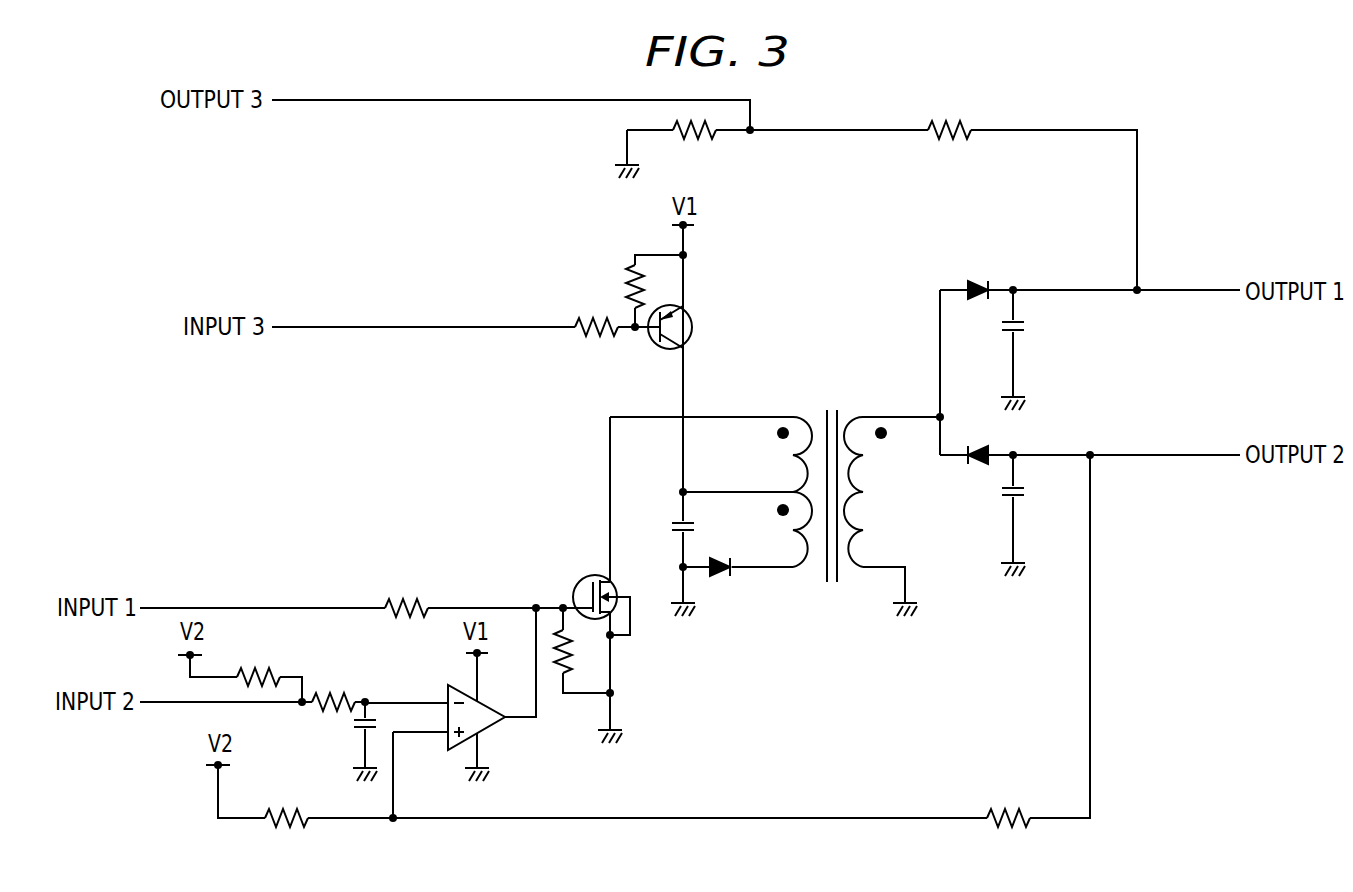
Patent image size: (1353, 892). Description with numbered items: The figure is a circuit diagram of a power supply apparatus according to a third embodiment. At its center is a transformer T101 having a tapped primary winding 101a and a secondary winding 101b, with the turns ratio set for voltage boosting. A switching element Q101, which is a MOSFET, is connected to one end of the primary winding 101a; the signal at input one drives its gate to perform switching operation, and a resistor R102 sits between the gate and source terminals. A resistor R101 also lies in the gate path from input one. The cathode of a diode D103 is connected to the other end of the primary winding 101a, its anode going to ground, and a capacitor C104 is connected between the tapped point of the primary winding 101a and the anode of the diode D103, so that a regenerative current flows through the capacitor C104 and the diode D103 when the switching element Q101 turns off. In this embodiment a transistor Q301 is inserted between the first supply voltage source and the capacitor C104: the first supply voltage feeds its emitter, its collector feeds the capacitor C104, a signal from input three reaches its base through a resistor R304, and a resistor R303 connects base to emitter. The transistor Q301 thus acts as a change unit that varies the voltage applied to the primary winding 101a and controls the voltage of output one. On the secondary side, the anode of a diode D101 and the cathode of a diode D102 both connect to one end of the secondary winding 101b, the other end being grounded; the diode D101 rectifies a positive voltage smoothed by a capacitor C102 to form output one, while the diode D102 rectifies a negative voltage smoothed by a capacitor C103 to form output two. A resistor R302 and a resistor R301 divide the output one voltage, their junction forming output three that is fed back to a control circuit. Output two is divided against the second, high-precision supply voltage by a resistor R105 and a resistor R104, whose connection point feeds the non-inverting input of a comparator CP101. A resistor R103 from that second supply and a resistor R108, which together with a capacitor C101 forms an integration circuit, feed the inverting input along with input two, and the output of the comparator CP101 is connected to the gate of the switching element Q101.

The resistor R301 is at (688, 146).
The resistor R302 is at (953, 116).
The resistor R303 is at (606, 286).
The resistor R304 is at (593, 342).
The transistor Q301 is at (701, 327).
The transformer T101 is at (829, 477).
The primary winding 101a is at (755, 417).
The secondary winding 101b is at (898, 417).
The diode D103 is at (749, 554).
The capacitor C104 is at (659, 542).
The diode D101 is at (983, 275).
The diode D102 is at (960, 472).
The capacitor C102 is at (1041, 341).
The capacitor C103 is at (1038, 506).
The resistor R105 is at (1010, 804).
The resistor R101 is at (405, 592).
The switching element Q101 is at (583, 590).
The resistor R102 is at (574, 653).
The comparator CP101 is at (498, 721).
The resistor R103 is at (255, 663).
The resistor R108 is at (339, 688).
The capacitor C101 is at (342, 739).
The resistor R104 is at (283, 804).